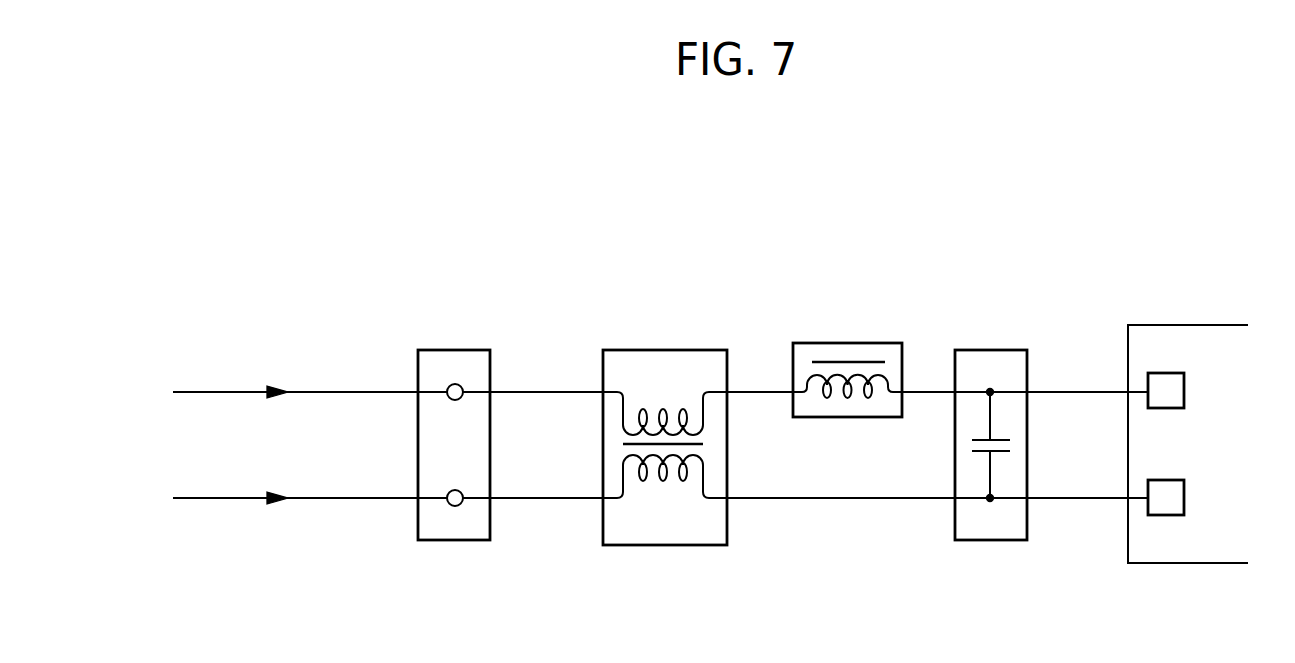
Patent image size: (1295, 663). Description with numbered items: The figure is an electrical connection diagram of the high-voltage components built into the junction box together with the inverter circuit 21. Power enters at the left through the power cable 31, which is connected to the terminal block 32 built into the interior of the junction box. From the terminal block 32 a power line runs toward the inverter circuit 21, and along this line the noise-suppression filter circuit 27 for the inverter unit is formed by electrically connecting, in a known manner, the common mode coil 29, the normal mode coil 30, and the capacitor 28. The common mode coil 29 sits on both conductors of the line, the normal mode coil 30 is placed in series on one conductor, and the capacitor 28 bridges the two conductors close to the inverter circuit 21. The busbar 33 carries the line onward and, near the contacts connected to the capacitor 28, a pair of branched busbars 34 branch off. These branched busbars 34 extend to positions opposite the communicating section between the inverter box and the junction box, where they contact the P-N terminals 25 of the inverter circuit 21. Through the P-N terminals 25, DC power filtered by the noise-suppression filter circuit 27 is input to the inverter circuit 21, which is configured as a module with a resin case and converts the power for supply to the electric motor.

The inverter circuit 21 is at (1173, 563).
The P-N terminals 25 is at (1170, 403).
The noise-suppression filter circuit 27 is at (715, 240).
The capacitor 28 is at (990, 350).
The common mode coil 29 is at (670, 350).
The normal mode coil 30 is at (852, 343).
The power cable 31 is at (162, 375).
The terminal block 32 is at (455, 350).
The busbar 33 is at (837, 498).
The branched busbars 34 is at (1075, 498).